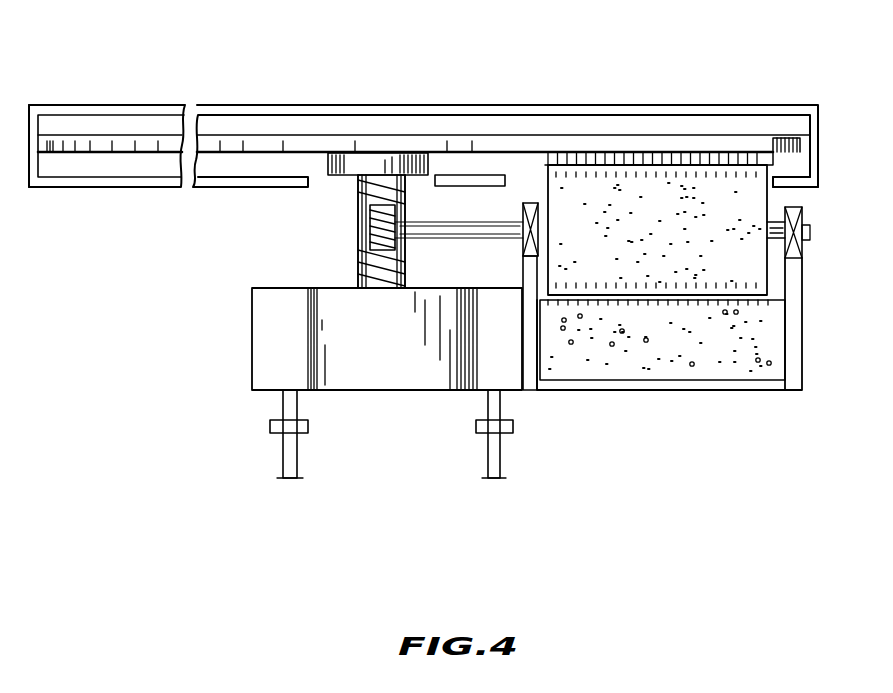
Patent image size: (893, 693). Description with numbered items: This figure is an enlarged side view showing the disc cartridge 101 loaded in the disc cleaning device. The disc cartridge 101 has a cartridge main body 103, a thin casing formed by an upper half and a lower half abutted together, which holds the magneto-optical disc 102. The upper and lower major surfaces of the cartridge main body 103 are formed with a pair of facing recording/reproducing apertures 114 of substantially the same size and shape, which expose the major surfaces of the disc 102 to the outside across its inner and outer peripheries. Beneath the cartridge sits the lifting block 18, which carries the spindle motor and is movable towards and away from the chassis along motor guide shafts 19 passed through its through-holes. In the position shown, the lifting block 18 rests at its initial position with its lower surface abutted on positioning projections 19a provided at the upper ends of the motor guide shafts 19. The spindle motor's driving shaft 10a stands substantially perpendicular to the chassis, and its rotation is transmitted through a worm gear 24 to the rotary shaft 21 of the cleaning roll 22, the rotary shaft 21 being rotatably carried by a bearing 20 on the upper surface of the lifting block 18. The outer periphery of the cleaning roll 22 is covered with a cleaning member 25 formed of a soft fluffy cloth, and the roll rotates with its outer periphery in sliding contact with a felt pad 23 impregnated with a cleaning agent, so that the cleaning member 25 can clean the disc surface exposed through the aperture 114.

The disc cartridge 101 is at (447, 101).
The magneto-optical disc 102 is at (660, 142).
The cartridge main body 103 is at (55, 188).
The recording/reproducing aperture 114 is at (773, 180).
The cleaning member 25 is at (732, 162).
The worm gear 24 is at (375, 233).
The driving shaft 10a is at (358, 266).
The rotary shaft 21 is at (498, 232).
The cleaning roll 22 is at (730, 263).
The bearing 20 is at (805, 212).
The felt pad 23 is at (708, 360).
The lifting block 18 is at (268, 345).
The motor guide shaft 19 is at (283, 460).
The positioning projection 19a is at (268, 430).